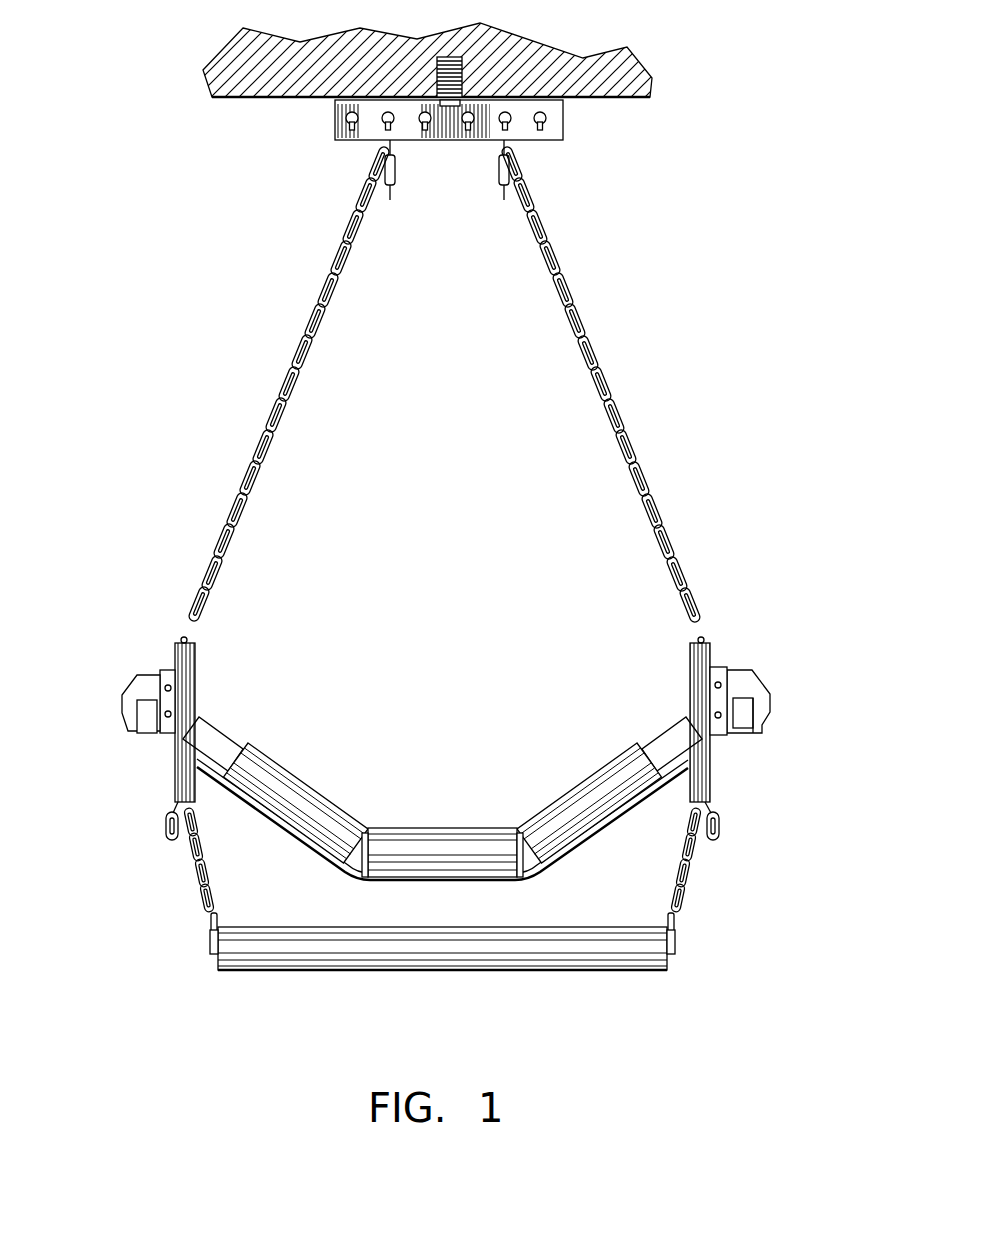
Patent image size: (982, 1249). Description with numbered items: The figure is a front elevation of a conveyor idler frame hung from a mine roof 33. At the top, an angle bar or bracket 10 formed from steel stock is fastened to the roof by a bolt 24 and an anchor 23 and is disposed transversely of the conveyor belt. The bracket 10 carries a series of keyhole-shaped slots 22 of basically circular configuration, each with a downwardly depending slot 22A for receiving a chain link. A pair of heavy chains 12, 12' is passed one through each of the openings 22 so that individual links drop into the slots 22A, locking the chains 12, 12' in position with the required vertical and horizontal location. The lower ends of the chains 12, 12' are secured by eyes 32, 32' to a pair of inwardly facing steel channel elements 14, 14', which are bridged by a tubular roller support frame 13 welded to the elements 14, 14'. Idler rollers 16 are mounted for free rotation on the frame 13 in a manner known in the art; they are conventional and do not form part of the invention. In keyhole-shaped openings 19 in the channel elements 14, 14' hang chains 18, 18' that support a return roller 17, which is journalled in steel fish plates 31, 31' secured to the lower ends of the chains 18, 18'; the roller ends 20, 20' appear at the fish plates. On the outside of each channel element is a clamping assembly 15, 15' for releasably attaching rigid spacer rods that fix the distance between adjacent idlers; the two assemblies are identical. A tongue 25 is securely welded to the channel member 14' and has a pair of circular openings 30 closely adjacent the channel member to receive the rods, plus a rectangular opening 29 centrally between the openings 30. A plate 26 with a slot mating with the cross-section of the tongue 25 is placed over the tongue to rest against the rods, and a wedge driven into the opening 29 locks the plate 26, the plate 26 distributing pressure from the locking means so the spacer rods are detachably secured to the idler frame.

The angle bar or bracket 10 is at (343, 107).
The heavy chain 12 is at (289, 383).
The heavy chain 12' is at (601, 384).
The tubular roller support frame 13 is at (203, 752).
The steel channel element 14 is at (213, 721).
The steel channel element 14' is at (659, 716).
The clamping assembly 15 is at (123, 694).
The clamping assembly 15' is at (773, 672).
The idler rollers 16 is at (332, 798).
The return roller 17 is at (418, 970).
The chain 18 is at (229, 859).
The chain 18' is at (713, 859).
The keyhole-shaped opening 19 is at (172, 799).
The roller end shaft 20 is at (173, 962).
The roller end shaft 20' is at (707, 949).
The keyhole-shaped slot 22 is at (347, 117).
The downwardly depending slot 22A is at (340, 139).
The anchor 23 is at (463, 72).
The bolt 24 is at (445, 142).
The tongue 25 is at (765, 720).
The plate 26 is at (722, 670).
The rectangular opening 29 is at (752, 700).
The circular openings 30 is at (714, 713).
The steel fish plate 31 is at (172, 928).
The steel fish plate 31' is at (707, 920).
The eye 32 is at (217, 618).
The eye 32' is at (657, 616).
The mine roof 33 is at (240, 87).